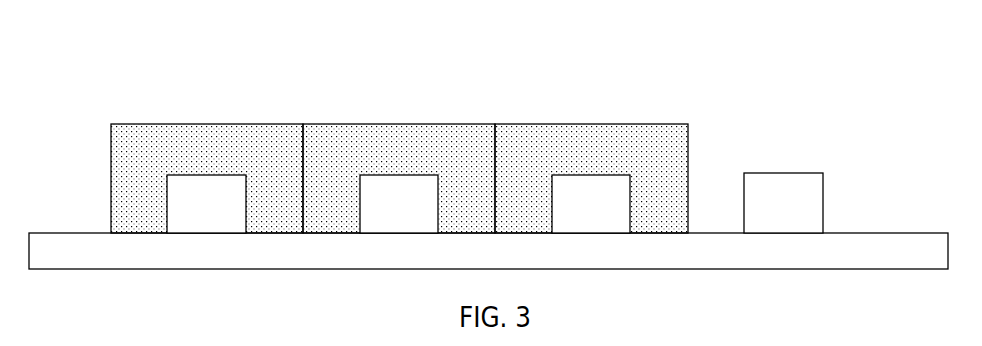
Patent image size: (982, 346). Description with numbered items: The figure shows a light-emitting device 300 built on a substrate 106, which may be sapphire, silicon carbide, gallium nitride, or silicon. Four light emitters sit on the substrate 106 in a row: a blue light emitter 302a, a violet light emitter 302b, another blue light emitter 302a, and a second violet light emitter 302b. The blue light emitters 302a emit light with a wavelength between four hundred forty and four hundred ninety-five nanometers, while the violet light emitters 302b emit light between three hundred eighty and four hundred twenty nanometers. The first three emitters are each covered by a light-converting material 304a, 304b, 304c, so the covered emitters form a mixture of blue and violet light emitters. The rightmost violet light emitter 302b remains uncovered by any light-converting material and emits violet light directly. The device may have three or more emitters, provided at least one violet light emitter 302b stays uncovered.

The light-emitting device 300 is at (141, 38).
The substrate 106 is at (488, 251).
The blue light emitter 302a is at (398, 204).
The violet light emitter 302b is at (591, 203).
The light-converting material 304a is at (229, 145).
The light-converting material 304b is at (427, 150).
The light-converting material 304c is at (617, 150).